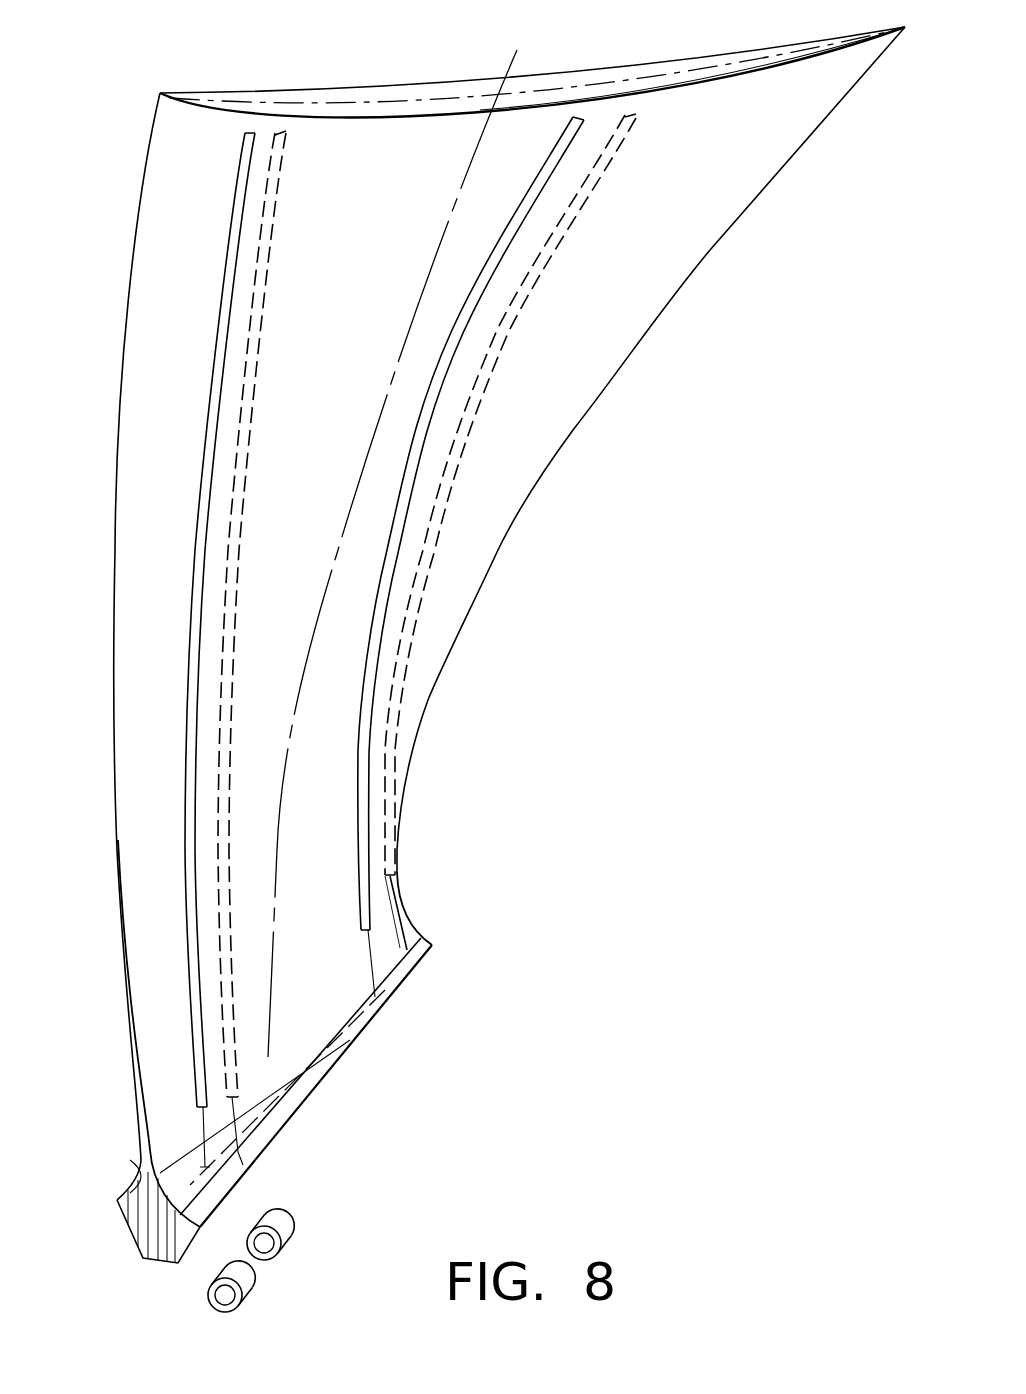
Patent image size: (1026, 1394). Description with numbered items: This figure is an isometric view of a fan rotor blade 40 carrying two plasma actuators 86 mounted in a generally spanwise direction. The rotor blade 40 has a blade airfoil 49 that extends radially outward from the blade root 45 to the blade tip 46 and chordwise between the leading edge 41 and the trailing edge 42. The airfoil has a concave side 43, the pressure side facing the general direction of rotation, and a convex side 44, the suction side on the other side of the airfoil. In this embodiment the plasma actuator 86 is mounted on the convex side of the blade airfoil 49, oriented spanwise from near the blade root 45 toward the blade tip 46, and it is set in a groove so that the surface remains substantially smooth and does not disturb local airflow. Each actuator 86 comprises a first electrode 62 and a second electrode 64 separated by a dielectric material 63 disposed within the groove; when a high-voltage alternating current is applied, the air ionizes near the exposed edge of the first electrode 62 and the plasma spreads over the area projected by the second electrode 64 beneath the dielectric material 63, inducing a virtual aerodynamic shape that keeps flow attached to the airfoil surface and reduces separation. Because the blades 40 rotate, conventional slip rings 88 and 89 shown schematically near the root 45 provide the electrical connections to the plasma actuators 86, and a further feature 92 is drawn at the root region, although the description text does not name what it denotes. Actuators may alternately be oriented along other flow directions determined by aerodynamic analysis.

The rotor blade 40 is at (635, 297).
The leading edge 41 is at (117, 462).
The trailing edge 42 is at (705, 258).
The concave side 43 is at (355, 85).
The convex side 44 is at (343, 122).
The blade root 45 is at (140, 1175).
The blade tip 46 is at (793, 42).
The blade airfoil 49 is at (182, 230).
The first electrode 62 is at (357, 750).
The dielectric material 63 is at (383, 678).
The second electrode 64 is at (398, 650).
The plasma actuator 86 is at (183, 619).
The slip ring 88 is at (247, 1295).
The slip ring 89 is at (283, 1250).
The mounting foot 92 is at (148, 1235).